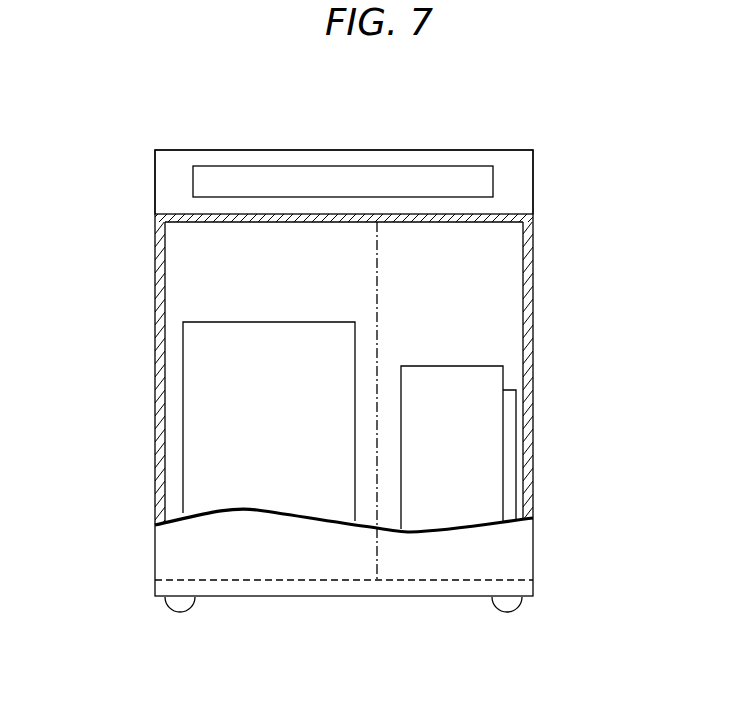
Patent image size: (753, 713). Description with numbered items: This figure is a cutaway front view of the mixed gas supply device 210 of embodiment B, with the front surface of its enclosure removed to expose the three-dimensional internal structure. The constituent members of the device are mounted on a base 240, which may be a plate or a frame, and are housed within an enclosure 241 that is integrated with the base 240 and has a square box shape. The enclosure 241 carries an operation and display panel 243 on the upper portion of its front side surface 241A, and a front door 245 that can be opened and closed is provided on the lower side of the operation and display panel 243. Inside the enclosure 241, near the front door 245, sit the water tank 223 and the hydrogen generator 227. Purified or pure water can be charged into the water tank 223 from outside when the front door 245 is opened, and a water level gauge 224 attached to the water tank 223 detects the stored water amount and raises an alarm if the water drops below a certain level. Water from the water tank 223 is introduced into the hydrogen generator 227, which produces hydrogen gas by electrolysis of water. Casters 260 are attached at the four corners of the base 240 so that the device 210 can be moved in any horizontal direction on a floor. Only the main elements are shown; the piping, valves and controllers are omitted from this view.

The mixed gas supply device 210 is at (570, 133).
The water tank 223 is at (468, 382).
The water level gauge 224 is at (508, 415).
The hydrogen generator 227 is at (220, 430).
The base 240 is at (333, 597).
The enclosure 241 is at (417, 150).
The front side surface 241A is at (270, 555).
The operation and display panel 243 is at (300, 178).
The front door 245 is at (437, 555).
The casters 260 is at (180, 607).